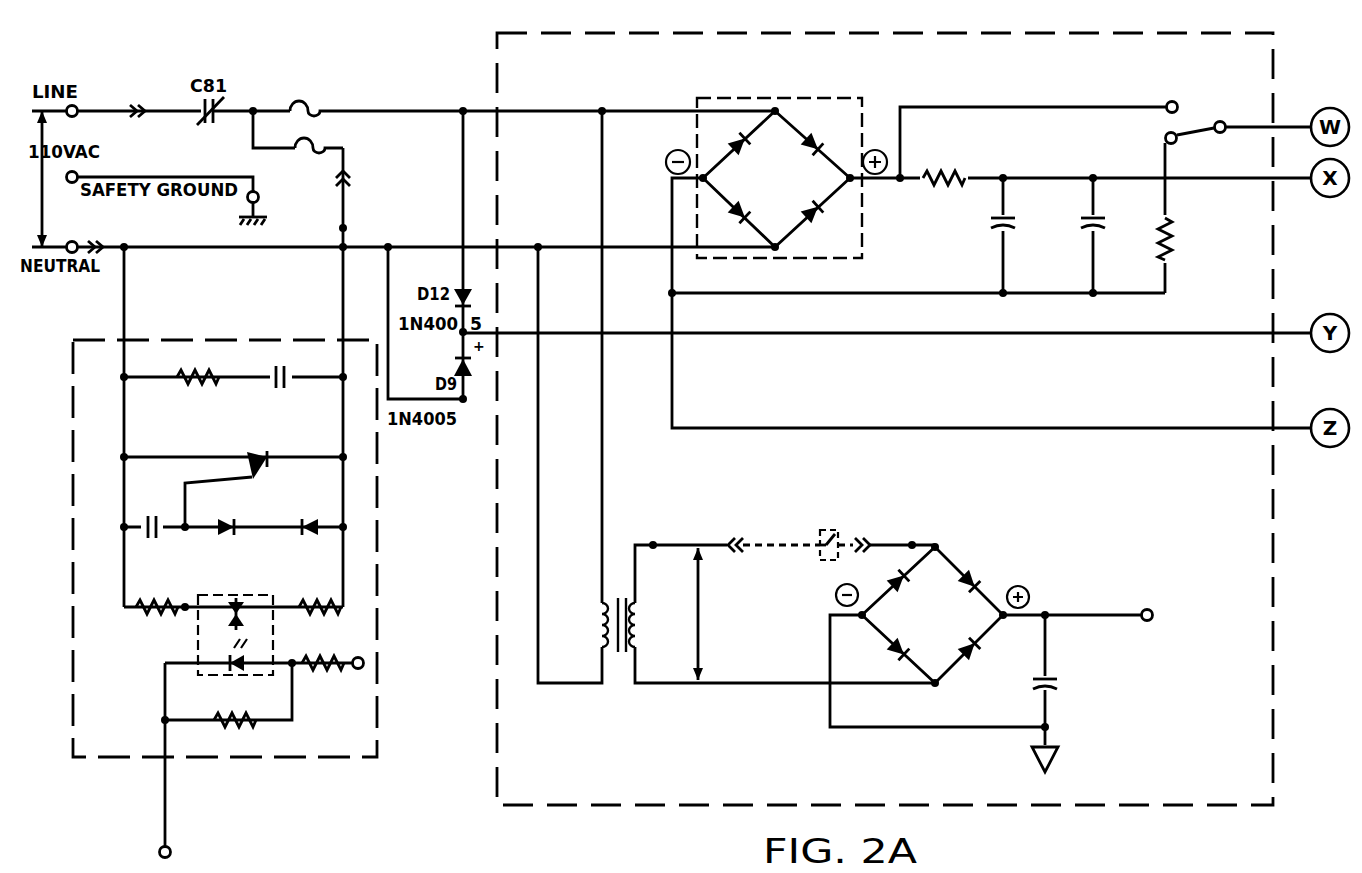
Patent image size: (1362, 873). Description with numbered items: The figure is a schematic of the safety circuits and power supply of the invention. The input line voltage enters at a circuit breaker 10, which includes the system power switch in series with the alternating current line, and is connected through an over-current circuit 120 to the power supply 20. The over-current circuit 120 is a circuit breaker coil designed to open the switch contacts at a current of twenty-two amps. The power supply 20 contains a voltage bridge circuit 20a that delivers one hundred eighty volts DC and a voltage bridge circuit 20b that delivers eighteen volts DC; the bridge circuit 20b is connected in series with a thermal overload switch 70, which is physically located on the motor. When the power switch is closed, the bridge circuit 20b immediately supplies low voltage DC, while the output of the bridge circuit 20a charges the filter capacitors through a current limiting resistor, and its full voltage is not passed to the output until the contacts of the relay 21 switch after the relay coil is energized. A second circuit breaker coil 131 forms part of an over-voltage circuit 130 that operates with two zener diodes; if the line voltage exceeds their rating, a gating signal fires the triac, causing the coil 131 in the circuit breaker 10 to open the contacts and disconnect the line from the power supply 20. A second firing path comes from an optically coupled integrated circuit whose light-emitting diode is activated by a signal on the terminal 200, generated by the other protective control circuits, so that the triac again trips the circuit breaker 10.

The circuit breaker 10 is at (242, 104).
The over-current circuit 120 is at (352, 105).
The second circuit breaker coil 131 is at (313, 161).
The over-voltage circuit 130 is at (360, 521).
The terminal 200 is at (171, 850).
The power supply 20 is at (913, 33).
The voltage bridge circuit 20a is at (843, 266).
The voltage bridge circuit 20b is at (1003, 553).
The relay 21 is at (1250, 145).
The thermal overload switch 70 is at (806, 580).